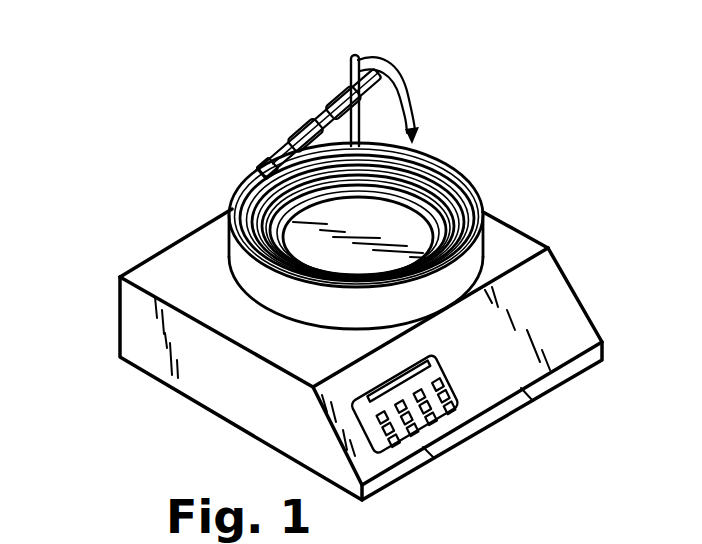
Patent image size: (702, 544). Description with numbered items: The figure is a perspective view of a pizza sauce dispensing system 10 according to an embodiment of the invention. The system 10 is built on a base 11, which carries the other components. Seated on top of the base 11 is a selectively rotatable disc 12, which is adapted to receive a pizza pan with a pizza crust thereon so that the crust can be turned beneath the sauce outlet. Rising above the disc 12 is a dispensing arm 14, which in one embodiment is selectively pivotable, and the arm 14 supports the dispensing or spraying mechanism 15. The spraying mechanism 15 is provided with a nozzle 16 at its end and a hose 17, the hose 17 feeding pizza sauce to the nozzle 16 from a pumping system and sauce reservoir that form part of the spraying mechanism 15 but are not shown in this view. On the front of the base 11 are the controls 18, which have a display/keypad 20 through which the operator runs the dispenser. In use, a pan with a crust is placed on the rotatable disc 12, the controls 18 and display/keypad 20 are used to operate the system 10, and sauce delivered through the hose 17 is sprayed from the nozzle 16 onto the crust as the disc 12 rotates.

The pizza sauce dispensing system 10 is at (152, 187).
The base 11 is at (168, 270).
The selectively rotatable disc 12 is at (481, 169).
The dispensing arm 14 is at (330, 66).
The dispensing or spraying mechanism 15 is at (276, 127).
The nozzle 16 is at (268, 162).
The hose 17 is at (408, 88).
The controls 18 is at (409, 462).
The display/keypad 20 is at (443, 417).